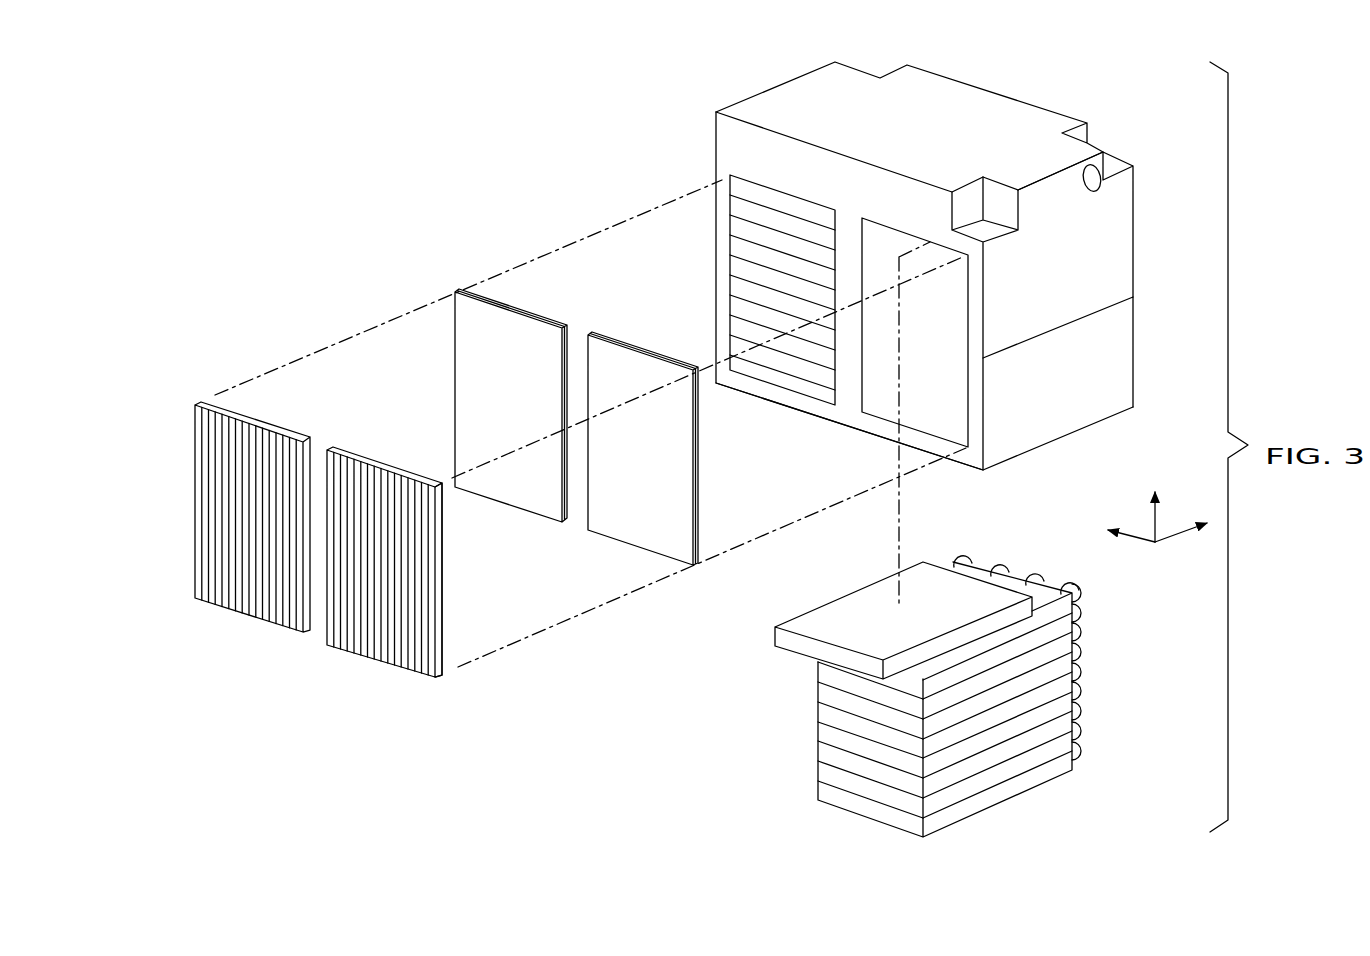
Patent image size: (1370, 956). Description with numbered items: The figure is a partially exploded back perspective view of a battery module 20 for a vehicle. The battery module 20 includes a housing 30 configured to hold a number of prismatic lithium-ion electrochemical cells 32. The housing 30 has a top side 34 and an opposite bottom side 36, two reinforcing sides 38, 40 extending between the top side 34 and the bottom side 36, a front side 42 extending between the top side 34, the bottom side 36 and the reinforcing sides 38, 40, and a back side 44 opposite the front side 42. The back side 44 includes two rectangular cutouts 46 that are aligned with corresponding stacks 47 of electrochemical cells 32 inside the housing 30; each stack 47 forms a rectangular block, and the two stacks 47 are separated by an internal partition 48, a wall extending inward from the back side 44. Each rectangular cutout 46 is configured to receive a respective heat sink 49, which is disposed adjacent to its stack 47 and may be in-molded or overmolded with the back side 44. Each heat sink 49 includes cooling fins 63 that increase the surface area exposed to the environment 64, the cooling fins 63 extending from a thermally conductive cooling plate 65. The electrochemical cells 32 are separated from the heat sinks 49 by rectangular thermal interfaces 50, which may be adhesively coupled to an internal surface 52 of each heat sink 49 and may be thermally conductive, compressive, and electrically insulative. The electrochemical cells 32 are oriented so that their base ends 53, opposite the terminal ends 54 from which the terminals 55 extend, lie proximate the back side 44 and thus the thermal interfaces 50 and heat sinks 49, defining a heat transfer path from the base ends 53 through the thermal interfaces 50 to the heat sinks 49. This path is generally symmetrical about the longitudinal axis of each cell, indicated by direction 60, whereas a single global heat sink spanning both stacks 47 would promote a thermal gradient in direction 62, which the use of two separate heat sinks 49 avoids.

The battery module 20 is at (1108, 90).
The housing 30 is at (1140, 130).
The electrochemical cells 32 is at (988, 592).
The top side 34 is at (985, 100).
The bottom side 36 is at (1073, 435).
The reinforcing side 38 is at (1115, 377).
The reinforcing side 40 is at (714, 112).
The front side 42 is at (1137, 247).
The back side 44 is at (732, 148).
The rectangular cutouts 46 is at (882, 247).
The stacks 47 is at (1010, 522).
The internal partition 48 is at (880, 382).
The heat sinks 49 is at (240, 407).
The thermal interfaces 50 is at (627, 342).
The internal surface 52 is at (443, 647).
The base ends 53 is at (812, 648).
The terminal ends 54 is at (923, 562).
The terminals 55 is at (958, 562).
The direction 60 is at (1180, 537).
The direction 62 is at (1145, 538).
The cooling fins 63 is at (218, 495).
The environment 64 is at (307, 523).
The thermally conductive cooling plate 65 is at (257, 423).